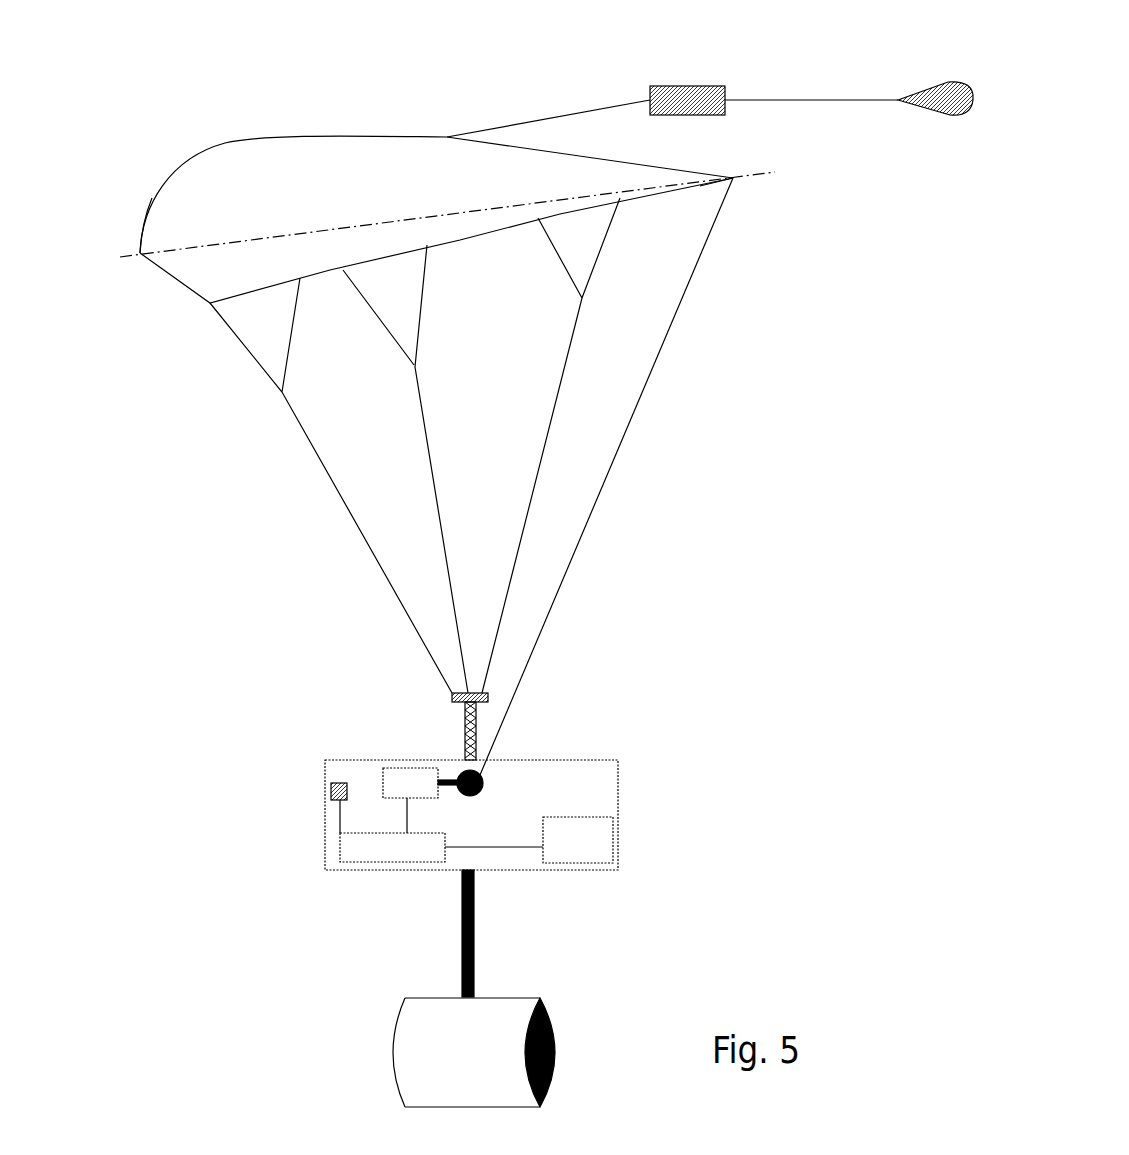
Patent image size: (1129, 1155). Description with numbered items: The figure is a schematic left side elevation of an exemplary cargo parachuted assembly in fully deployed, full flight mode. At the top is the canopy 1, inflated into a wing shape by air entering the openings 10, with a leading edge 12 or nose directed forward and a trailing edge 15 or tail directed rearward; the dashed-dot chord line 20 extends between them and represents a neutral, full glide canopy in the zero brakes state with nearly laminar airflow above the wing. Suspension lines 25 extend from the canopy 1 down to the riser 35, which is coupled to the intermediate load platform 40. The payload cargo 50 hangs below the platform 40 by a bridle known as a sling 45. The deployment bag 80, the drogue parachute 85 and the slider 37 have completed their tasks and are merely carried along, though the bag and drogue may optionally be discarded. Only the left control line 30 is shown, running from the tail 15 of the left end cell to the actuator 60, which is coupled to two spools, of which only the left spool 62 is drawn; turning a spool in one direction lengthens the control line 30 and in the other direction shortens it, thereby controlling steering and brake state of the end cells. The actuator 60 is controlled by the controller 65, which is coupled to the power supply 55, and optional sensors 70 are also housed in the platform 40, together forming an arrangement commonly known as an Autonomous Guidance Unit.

The canopy 1 is at (153, 155).
The openings 10 is at (180, 282).
The leading edge 12 is at (140, 247).
The trailing edge 15 is at (733, 178).
The chord line 20 is at (767, 175).
The suspension lines 25 is at (515, 557).
The control line 30 is at (668, 345).
The riser 35 is at (467, 733).
The slider 37 is at (450, 695).
The intermediate load platform 40 is at (317, 808).
The sling 45 is at (462, 945).
The payload cargo 50 is at (393, 1013).
The power supply 55 is at (597, 840).
The actuator 60 is at (380, 783).
The spool 62 is at (487, 787).
The controller 65 is at (338, 847).
The sensor 70 is at (331, 792).
The deployment bag 80 is at (727, 113).
The drogue parachute 85 is at (947, 117).